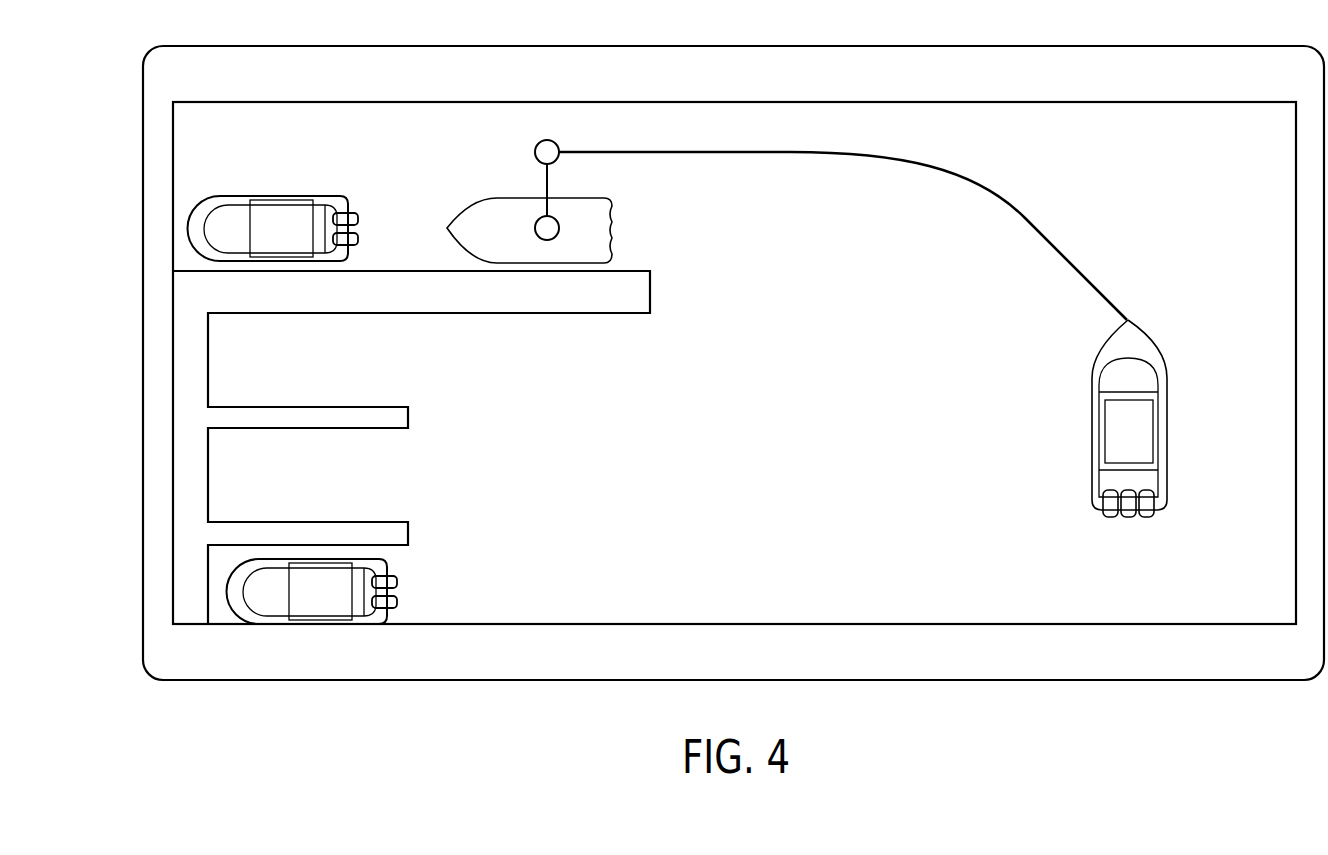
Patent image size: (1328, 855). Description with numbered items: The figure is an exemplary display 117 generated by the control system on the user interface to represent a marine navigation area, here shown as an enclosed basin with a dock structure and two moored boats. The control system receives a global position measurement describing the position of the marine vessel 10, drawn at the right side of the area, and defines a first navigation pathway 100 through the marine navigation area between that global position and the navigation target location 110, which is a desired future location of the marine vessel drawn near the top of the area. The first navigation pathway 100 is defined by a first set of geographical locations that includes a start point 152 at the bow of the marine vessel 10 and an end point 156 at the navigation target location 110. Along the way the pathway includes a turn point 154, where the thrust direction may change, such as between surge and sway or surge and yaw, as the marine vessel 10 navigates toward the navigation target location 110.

The marine vessel 10 is at (1162, 400).
The first navigation pathway 100 is at (1000, 188).
The navigation target location 110 is at (610, 200).
The display 117 is at (1156, 628).
The start point 152 is at (1130, 318).
The turn point 154 is at (538, 151).
The end point 156 is at (558, 234).